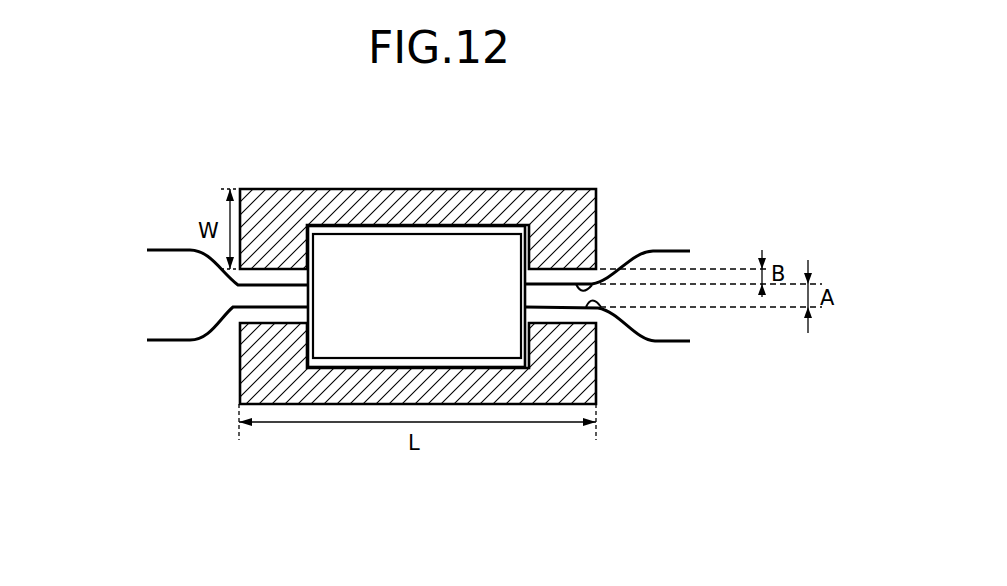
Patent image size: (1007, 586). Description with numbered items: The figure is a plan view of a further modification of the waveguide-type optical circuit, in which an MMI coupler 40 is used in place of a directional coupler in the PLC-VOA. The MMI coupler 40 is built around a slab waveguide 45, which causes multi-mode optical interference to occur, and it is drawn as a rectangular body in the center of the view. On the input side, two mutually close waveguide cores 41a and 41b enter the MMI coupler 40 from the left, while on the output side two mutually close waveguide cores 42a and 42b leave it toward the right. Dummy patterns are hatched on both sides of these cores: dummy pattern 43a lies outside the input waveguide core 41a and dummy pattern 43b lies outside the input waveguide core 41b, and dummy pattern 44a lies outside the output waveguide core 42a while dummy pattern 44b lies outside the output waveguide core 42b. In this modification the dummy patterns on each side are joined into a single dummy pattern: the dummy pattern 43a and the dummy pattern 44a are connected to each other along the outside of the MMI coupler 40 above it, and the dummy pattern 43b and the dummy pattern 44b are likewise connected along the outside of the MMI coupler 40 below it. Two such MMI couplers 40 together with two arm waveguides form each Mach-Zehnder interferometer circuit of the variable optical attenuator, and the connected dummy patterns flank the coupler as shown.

The MMI coupler 40 is at (417, 224).
The slab waveguide 45 is at (478, 252).
The waveguide core 41a is at (236, 286).
The waveguide core 41b is at (228, 305).
The waveguide core 42a is at (600, 283).
The waveguide core 42b is at (603, 310).
The dummy pattern 43a is at (265, 194).
The dummy pattern 43b is at (253, 375).
The dummy pattern 44a is at (562, 195).
The dummy pattern 44b is at (577, 390).